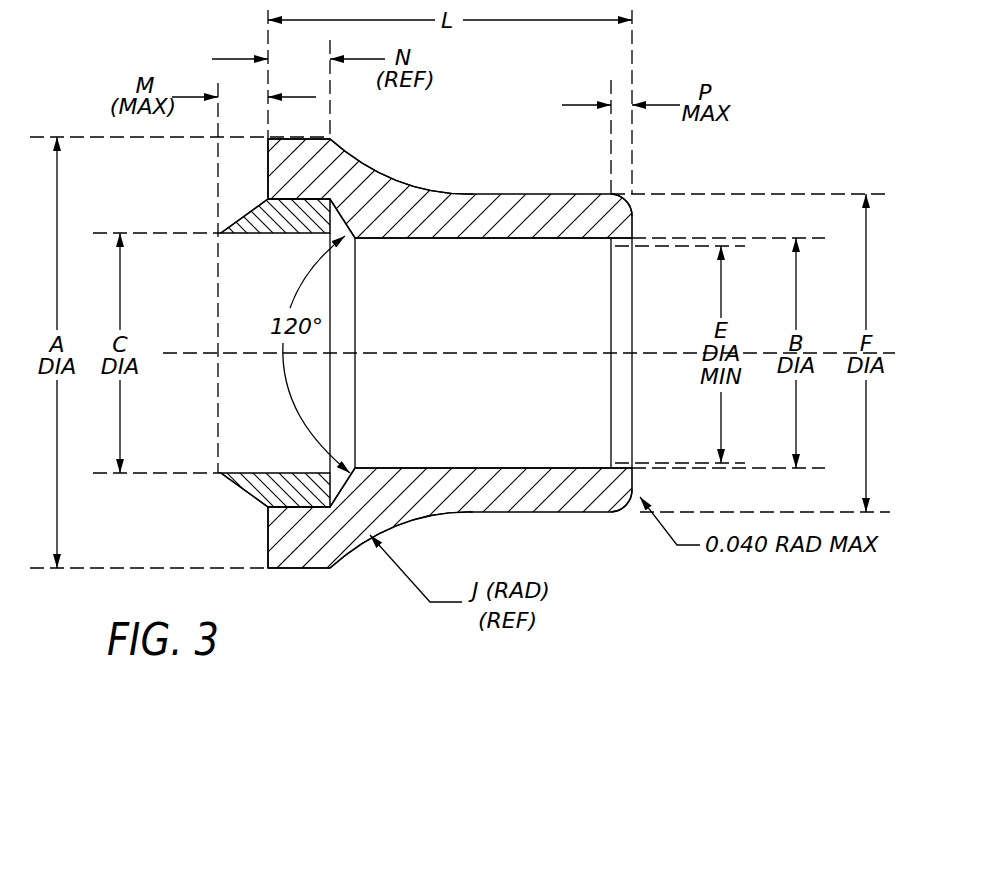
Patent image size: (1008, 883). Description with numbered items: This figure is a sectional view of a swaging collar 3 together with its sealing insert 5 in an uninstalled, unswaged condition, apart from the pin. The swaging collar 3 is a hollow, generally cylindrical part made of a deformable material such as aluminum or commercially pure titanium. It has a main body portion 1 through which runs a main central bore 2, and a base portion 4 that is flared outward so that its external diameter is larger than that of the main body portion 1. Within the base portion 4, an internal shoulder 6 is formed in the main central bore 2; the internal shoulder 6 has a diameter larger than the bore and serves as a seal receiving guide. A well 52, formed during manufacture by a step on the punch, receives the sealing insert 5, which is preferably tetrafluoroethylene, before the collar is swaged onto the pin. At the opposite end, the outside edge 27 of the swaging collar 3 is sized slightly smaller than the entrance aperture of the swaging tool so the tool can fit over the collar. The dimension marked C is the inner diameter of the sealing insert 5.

The main body portion 1 is at (488, 194).
The main central bore 2 is at (428, 238).
The swaging collar 3 is at (360, 173).
The base portion 4 is at (308, 139).
The sealing insert 5 is at (260, 233).
The internal shoulder 6 is at (273, 205).
The well 52 is at (330, 233).
The outside edge 27 is at (622, 512).